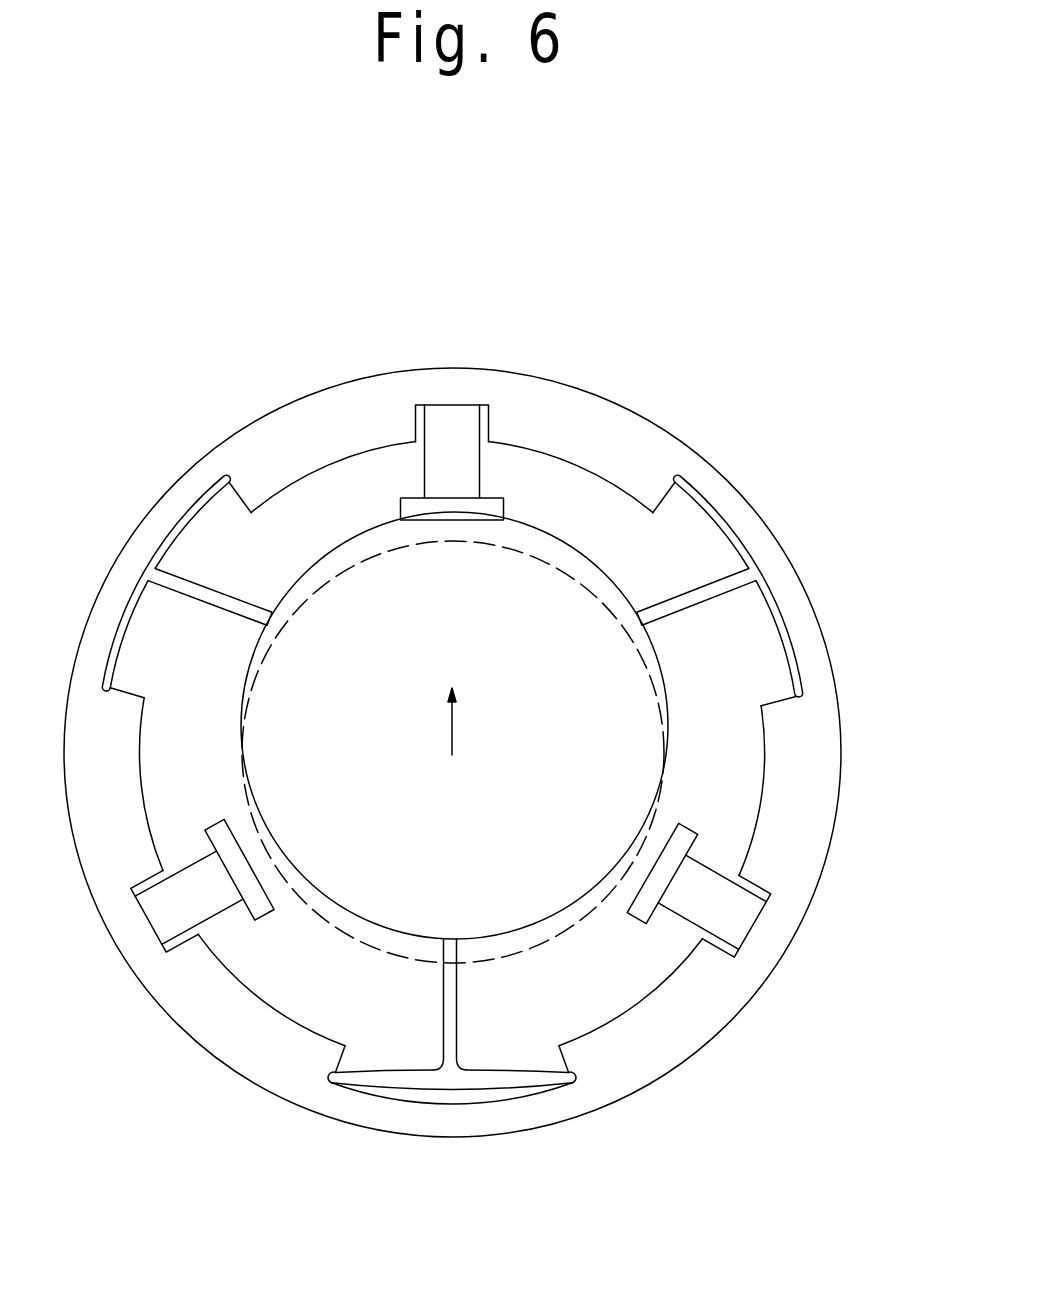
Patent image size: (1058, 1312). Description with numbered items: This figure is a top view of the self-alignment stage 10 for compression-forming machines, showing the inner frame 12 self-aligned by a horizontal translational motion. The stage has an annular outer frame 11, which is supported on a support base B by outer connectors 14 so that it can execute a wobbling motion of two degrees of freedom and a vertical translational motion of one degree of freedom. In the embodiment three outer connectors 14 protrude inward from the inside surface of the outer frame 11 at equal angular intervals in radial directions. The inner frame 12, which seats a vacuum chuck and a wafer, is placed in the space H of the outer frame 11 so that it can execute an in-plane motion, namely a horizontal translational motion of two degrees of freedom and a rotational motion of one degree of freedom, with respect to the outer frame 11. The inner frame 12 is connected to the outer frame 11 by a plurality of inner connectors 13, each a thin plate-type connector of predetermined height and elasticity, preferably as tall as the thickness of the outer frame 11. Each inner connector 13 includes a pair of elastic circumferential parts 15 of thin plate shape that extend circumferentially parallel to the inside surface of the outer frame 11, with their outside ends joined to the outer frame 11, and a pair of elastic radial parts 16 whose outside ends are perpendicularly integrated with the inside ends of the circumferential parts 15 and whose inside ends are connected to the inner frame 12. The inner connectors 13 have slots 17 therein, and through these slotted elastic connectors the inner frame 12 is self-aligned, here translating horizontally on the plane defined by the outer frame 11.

The self-alignment stage 10 is at (653, 400).
The outer frame 11 is at (810, 723).
The inner frame 12 is at (643, 770).
The space H is at (710, 818).
The outer connector 14 is at (703, 888).
The support base B is at (645, 905).
The inner connector 13 is at (485, 1033).
The elastic circumferential part 15 is at (375, 1078).
The elastic radial part 16 is at (443, 1030).
The slot 17 is at (478, 1100).